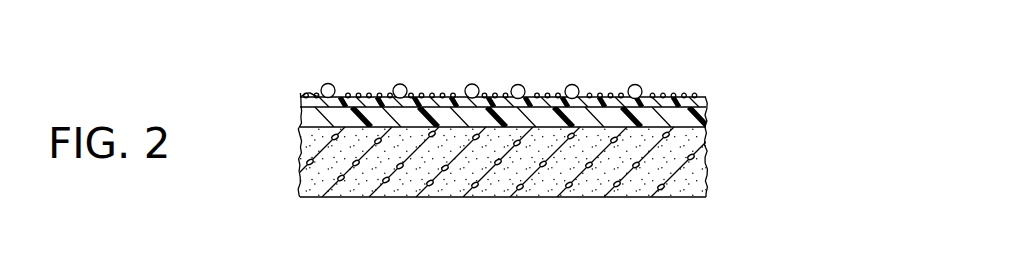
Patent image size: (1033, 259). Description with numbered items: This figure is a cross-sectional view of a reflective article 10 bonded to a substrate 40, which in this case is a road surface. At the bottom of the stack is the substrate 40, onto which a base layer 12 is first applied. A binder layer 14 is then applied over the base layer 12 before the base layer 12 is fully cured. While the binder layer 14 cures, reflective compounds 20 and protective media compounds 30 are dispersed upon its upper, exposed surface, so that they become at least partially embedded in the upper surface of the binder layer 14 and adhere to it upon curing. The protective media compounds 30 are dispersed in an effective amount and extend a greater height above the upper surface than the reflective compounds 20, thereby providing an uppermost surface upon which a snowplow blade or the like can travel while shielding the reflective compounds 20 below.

The reflective article 10 is at (333, 83).
The base layer 12 is at (702, 120).
The binder layer 14 is at (317, 96).
The reflective compounds 20 is at (430, 93).
The protective media compounds 30 is at (400, 84).
The substrate 40 is at (689, 168).